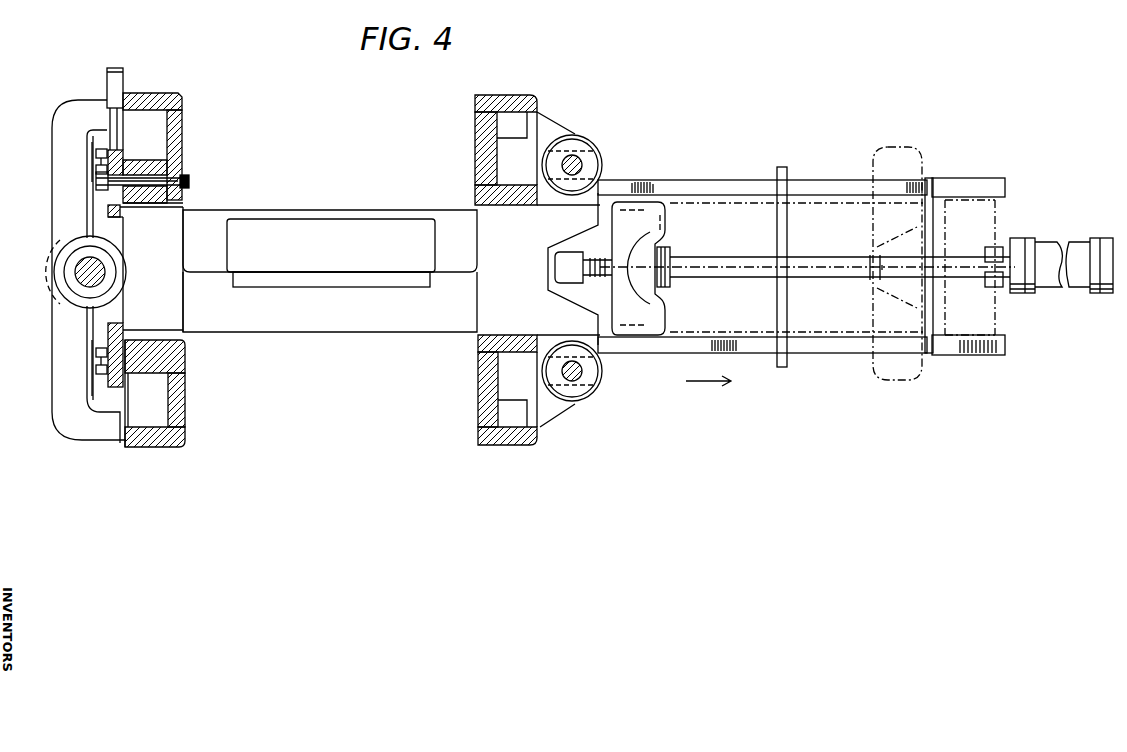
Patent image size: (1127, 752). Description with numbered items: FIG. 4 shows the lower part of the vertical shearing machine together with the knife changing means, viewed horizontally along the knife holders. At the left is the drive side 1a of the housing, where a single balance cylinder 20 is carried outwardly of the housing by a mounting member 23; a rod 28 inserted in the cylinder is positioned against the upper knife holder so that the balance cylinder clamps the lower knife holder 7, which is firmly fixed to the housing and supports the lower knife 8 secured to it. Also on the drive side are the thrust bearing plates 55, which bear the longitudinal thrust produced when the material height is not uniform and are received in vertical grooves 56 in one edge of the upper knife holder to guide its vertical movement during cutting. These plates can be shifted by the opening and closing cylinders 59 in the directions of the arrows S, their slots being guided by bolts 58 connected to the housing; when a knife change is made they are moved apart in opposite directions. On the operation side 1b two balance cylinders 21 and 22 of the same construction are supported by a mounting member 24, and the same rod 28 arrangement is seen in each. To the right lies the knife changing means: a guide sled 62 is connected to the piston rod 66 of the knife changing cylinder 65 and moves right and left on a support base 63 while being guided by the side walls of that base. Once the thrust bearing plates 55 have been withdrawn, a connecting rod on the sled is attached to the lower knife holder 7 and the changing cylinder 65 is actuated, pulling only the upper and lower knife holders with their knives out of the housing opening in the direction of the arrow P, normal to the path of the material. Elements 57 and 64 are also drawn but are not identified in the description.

The drive side of the housing 1a is at (176, 93).
The operation side of the housing 1b is at (535, 95).
The lower knife holder 7 is at (364, 332).
The lower knife 8 is at (358, 268).
The balance cylinder 20 is at (120, 290).
The balance cylinder 21 is at (602, 373).
The balance cylinder 22 is at (596, 142).
The mounting member 23 is at (104, 100).
The mounting member 24 is at (558, 122).
The rod 28 is at (96, 272).
The thrust bearing plates 55 is at (125, 160).
The vertical grooves 56 is at (125, 224).
The shim 57 is at (120, 212).
The bolts 58 is at (190, 181).
The opening and closing cylinders 59 is at (122, 70).
The guide sled 62 is at (658, 188).
The support base 63 is at (764, 356).
The upright 64 is at (745, 182).
The knife changing cylinder 65 is at (1025, 240).
The piston rod 66 is at (826, 256).
The arrows S is at (91, 160).
The arrow P is at (708, 391).